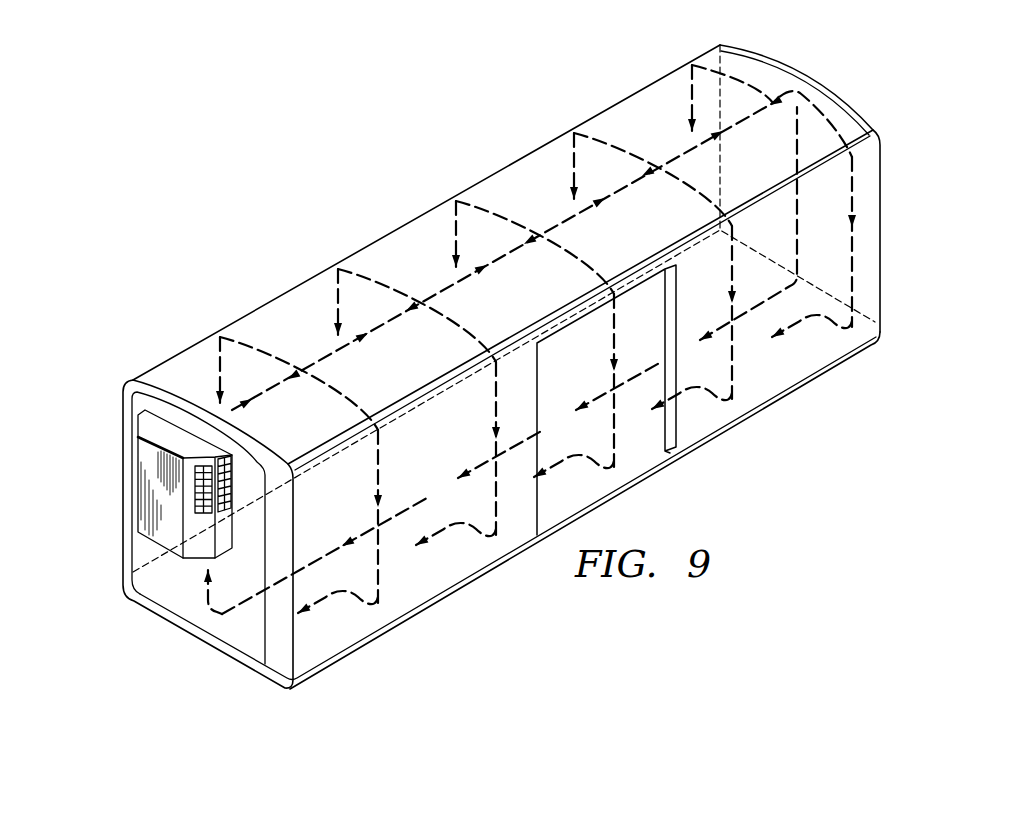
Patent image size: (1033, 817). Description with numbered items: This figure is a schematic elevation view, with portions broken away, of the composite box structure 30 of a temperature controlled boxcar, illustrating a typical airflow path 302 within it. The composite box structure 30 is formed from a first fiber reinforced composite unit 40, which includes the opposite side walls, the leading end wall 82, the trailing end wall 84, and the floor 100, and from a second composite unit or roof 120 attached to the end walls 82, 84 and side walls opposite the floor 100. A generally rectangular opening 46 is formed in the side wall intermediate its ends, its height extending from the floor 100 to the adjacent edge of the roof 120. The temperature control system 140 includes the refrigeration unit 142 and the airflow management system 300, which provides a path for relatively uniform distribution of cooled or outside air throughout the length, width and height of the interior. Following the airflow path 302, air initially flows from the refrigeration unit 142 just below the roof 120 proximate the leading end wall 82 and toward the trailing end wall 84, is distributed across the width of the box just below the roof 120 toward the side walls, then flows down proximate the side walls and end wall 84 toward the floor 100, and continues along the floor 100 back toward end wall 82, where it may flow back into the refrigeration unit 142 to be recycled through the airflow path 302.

The composite box structure 30 is at (325, 173).
The first fiber reinforced composite unit 40 is at (194, 342).
The opening 46 is at (585, 384).
The end wall 82 is at (190, 597).
The end wall 84 is at (800, 72).
The floor 100 is at (783, 395).
The roof 120 is at (287, 317).
The temperature control system 140 is at (146, 484).
The refrigeration unit 142 is at (145, 521).
The airflow management system 300 is at (97, 401).
The airflow path 302 is at (377, 277).